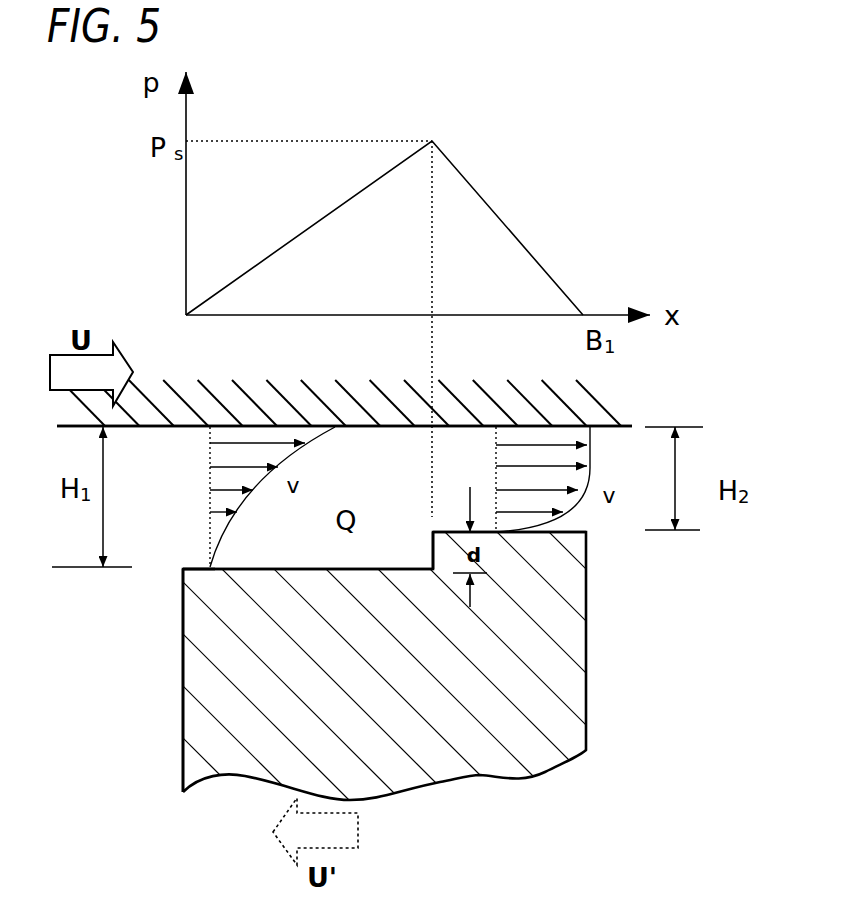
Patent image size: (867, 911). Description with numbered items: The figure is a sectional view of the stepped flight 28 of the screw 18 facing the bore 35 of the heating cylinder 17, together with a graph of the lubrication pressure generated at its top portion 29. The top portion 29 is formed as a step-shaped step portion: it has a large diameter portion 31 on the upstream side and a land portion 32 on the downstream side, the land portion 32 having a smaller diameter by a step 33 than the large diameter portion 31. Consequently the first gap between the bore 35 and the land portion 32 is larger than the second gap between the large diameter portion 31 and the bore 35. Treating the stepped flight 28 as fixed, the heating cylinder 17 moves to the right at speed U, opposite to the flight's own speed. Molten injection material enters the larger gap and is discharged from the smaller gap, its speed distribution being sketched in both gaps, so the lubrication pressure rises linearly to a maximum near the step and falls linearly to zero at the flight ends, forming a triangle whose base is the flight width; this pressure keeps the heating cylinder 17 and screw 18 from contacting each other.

The heating cylinder 17 is at (185, 398).
The screw 18 is at (183, 724).
The stepped flight 28 is at (183, 680).
The top portion 29 is at (378, 569).
The large diameter portion 31 is at (579, 532).
The land portion 32 is at (206, 567).
The step 33 is at (434, 565).
The bore 35 is at (398, 428).